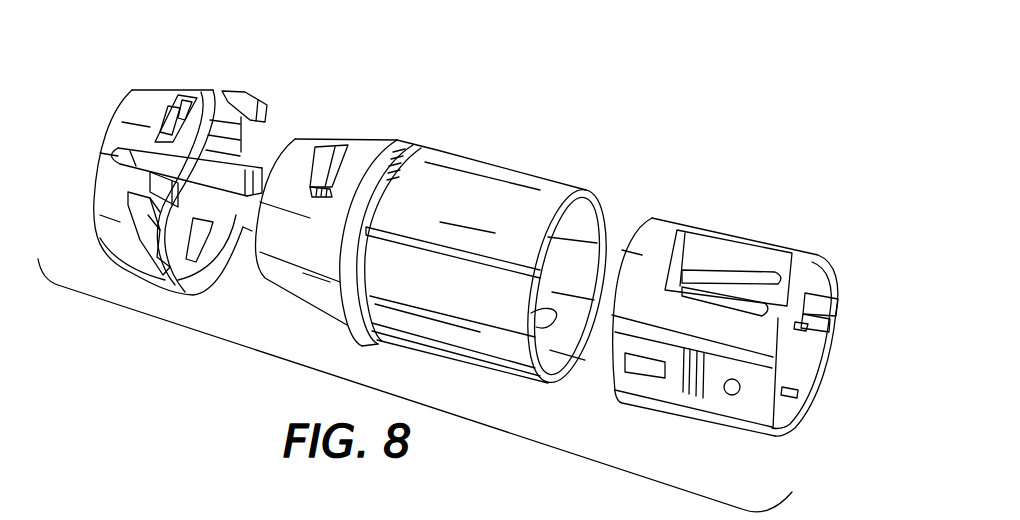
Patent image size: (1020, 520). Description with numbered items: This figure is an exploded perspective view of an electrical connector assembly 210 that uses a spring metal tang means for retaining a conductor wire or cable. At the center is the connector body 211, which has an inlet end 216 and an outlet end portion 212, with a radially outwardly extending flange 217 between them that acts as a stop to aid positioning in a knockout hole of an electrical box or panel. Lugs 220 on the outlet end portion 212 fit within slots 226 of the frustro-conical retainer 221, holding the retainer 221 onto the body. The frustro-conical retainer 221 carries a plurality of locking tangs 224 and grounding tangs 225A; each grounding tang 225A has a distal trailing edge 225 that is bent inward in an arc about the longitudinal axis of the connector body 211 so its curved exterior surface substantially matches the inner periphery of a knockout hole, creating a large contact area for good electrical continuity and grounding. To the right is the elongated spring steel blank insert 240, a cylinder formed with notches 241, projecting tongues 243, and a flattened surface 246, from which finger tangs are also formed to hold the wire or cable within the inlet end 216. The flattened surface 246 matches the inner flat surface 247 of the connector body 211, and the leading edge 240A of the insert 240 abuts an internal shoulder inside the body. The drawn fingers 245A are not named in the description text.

The electrical connector assembly 210 is at (503, 161).
The connector body 211 is at (403, 333).
The outlet end portion 212 is at (295, 267).
The inlet end 216 is at (480, 350).
The radially outwardly extending flange 217 is at (403, 143).
The lug 220 is at (332, 157).
The frustro-conical retainer 221 is at (177, 85).
The locking tang 224 is at (143, 228).
The distal trailing edge 225 is at (212, 108).
The grounding tang 225A is at (148, 183).
The slot 226 is at (175, 115).
The elongated spring steel blank insert 240 is at (815, 246).
The leading edge 240A is at (627, 235).
The notch 241 is at (798, 326).
The projecting tongue 243 is at (806, 305).
The latch fingers 245A is at (733, 267).
The flattened surface 246 is at (688, 378).
The inner flat surface 247 is at (531, 313).